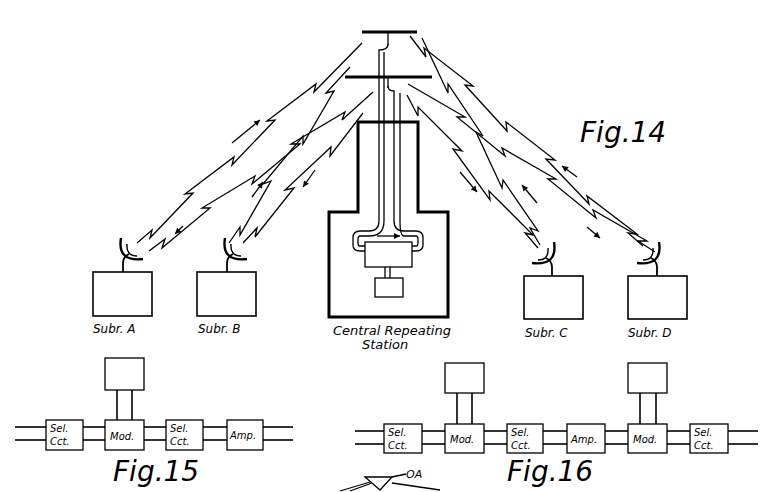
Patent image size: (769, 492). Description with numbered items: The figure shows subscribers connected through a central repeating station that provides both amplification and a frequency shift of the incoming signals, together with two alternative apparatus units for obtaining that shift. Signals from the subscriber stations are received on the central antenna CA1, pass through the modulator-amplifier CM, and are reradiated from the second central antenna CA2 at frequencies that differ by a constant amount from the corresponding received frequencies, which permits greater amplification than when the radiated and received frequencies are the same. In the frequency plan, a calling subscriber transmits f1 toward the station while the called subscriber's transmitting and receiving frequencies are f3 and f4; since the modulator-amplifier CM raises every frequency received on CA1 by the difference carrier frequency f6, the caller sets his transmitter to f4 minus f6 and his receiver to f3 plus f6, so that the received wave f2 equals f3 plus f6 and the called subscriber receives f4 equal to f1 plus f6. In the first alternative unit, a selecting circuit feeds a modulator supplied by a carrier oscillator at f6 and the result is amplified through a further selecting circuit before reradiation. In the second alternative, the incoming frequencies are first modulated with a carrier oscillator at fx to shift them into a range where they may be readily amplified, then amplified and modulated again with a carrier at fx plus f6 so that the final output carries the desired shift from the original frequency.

In FIG. 14, the receiving antenna of central repeating station CA1 is at (388, 43).
In FIG. 14, the radiating antenna of central repeating station CA2 is at (392, 88).
In FIG. 14, the modulator-amplifier CM is at (388, 219).
In FIG. 14, the transmitting frequency of subscriber A f1 is at (255, 147).
In FIG. 14, the receiving frequency of subscriber B f2 is at (266, 161).
In FIG. 14, the transmitting frequency of subscriber D f3 is at (531, 144).
In FIG. 14, the receiving frequency of subscriber D f4 is at (503, 149).
In FIG. 14, the difference carrier frequency f6 is at (387, 310).
In FIG. 15, the difference carrier frequency f6 is at (144, 375).
In FIG. 16, the difference carrier frequency f6 is at (667, 380).
In FIG. 16, the intermediate carrier frequency fx is at (484, 379).